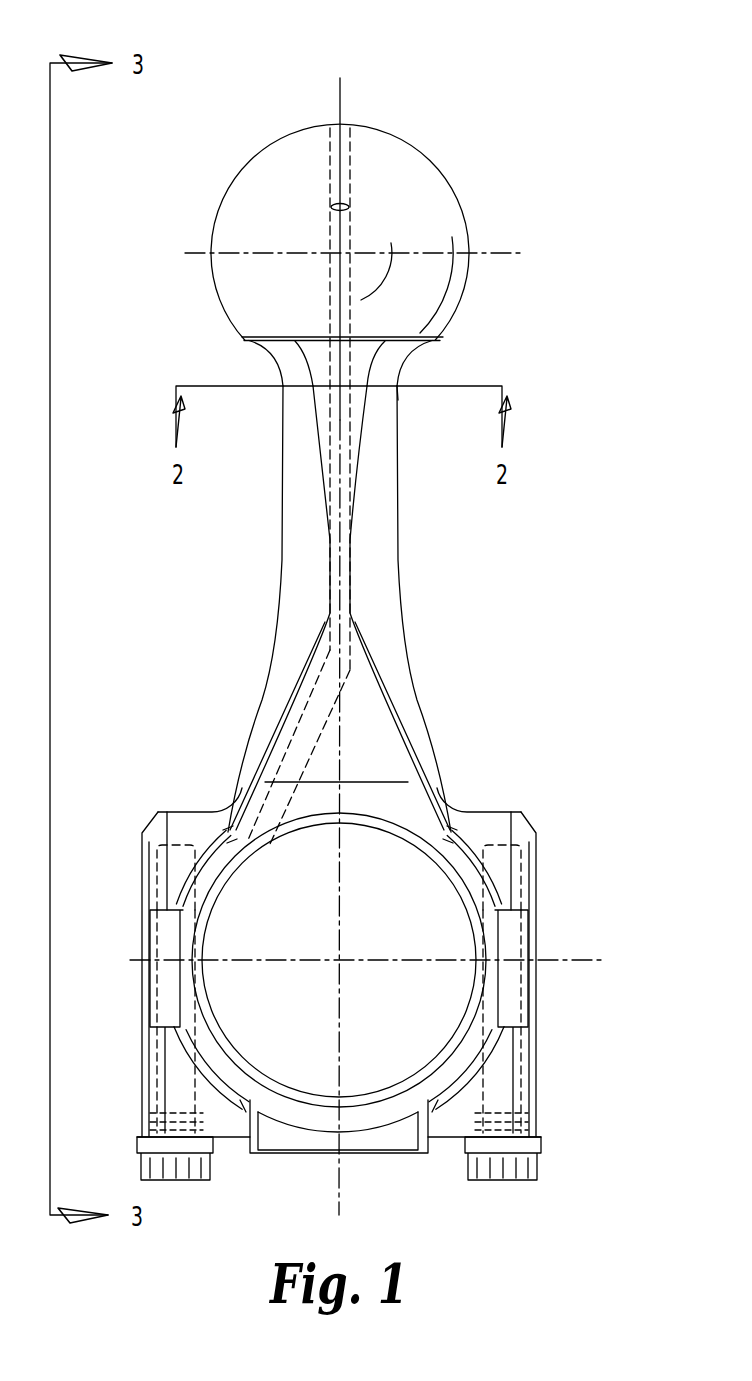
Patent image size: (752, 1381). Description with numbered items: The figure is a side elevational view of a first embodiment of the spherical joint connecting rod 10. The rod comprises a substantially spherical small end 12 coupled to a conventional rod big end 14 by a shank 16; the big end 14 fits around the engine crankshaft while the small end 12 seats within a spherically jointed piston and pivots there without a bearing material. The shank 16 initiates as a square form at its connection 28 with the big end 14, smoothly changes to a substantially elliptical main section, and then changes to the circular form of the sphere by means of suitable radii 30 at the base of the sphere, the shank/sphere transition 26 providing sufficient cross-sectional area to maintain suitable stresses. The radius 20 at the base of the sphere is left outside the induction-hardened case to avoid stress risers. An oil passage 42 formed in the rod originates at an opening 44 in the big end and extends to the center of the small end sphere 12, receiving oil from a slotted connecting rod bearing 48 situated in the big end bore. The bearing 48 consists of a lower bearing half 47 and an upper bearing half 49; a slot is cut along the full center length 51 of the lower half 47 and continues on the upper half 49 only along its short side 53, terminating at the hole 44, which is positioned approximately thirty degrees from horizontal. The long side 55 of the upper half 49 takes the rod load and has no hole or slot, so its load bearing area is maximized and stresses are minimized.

The spherical joint connecting rod 10 is at (545, 78).
The spherical small end 12 is at (422, 152).
The rod big end 14 is at (537, 934).
The shank 16 is at (399, 468).
The radius at the base of the sphere 20 is at (440, 341).
The shank/sphere transition 26 is at (398, 377).
The connection with the big end 28 is at (430, 788).
The radii at the base of the sphere 30 is at (262, 360).
The oil passage 42 is at (352, 523).
The opening 44 is at (256, 850).
The lower bearing half 47 is at (398, 1095).
The slotted connecting rod bearing 48 is at (467, 888).
The upper bearing half 49 is at (343, 830).
The full center length 51 is at (220, 1019).
The short side 53 is at (217, 909).
The long side 55 is at (453, 893).